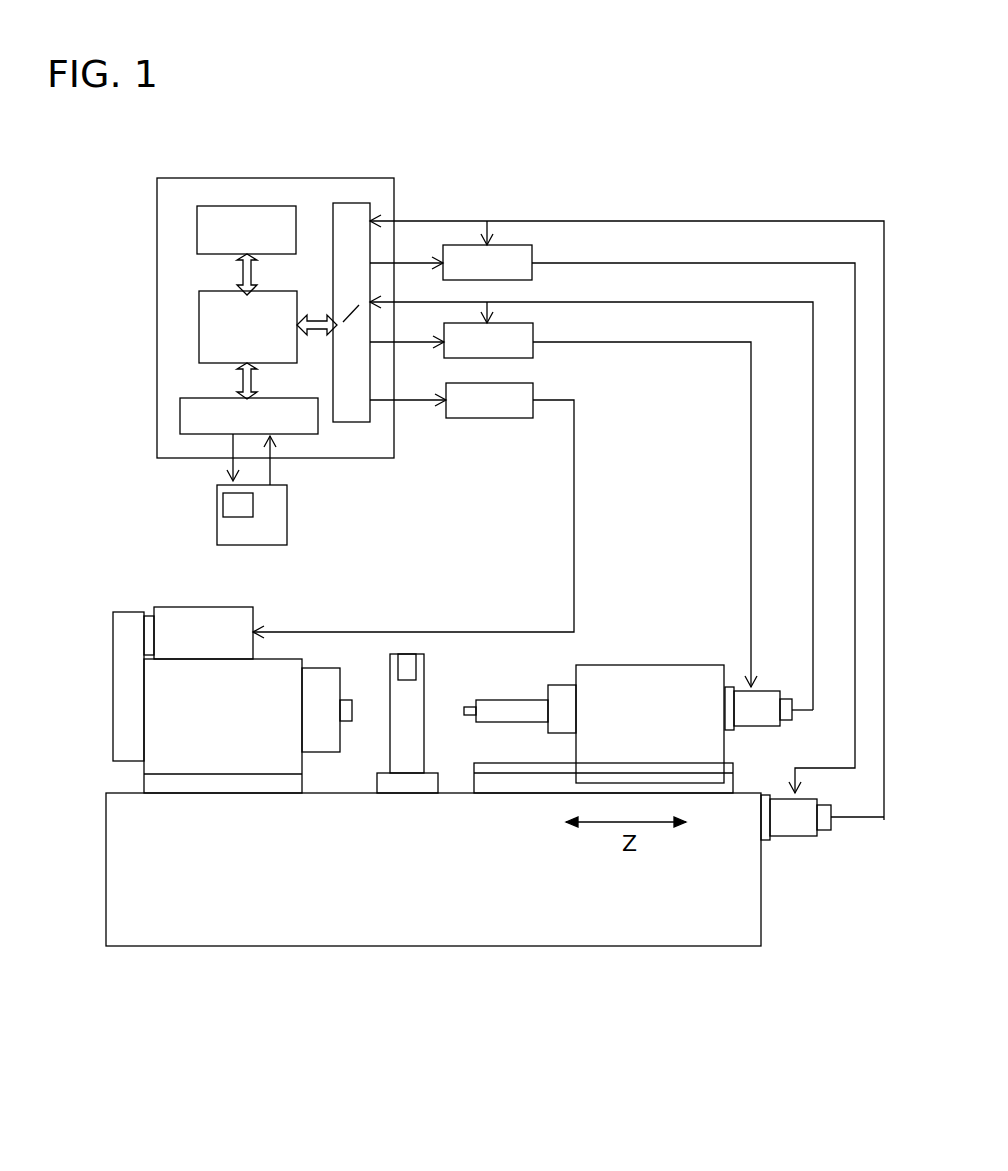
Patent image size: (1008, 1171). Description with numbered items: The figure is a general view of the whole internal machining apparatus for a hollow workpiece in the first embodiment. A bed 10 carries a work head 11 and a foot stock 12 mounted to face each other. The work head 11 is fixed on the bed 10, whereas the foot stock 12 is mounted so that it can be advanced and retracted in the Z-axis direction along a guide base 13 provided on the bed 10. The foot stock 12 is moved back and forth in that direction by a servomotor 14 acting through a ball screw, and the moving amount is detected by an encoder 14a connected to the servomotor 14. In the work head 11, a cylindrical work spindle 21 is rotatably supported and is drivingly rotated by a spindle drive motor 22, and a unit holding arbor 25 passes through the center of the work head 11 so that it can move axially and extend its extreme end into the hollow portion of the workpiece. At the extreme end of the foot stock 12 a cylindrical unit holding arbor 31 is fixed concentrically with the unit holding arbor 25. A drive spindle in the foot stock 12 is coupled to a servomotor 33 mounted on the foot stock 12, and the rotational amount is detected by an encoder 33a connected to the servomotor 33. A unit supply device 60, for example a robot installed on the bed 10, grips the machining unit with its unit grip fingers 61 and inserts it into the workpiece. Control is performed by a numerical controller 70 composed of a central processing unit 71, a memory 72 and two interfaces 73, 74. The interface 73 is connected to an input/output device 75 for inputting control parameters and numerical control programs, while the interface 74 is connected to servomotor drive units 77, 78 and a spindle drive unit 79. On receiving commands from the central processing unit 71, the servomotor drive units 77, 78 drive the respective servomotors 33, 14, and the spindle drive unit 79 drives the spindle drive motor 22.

The bed 10 is at (440, 935).
The work head 11 is at (163, 708).
The foot stock 12 is at (648, 672).
The guide base 13 is at (504, 787).
The servomotor 14 is at (793, 825).
The encoder 14a is at (823, 830).
The work spindle 21 is at (322, 680).
The spindle drive motor 22 is at (194, 618).
The unit holding arbor 25 is at (349, 712).
The unit holding arbor 31 is at (506, 710).
The servomotor 33 is at (757, 720).
The encoder 33a is at (787, 704).
The unit supply device 60 is at (430, 680).
The unit grip fingers 61 is at (409, 662).
The numerical controller 70 is at (267, 178).
The central processing unit 71 is at (207, 331).
The memory 72 is at (197, 229).
The interface 73 is at (301, 428).
The interface 74 is at (351, 213).
The input/output device 75 is at (276, 512).
The servomotor drive unit 77 is at (518, 354).
The servomotor drive unit 78 is at (513, 256).
The spindle drive unit 79 is at (491, 420).